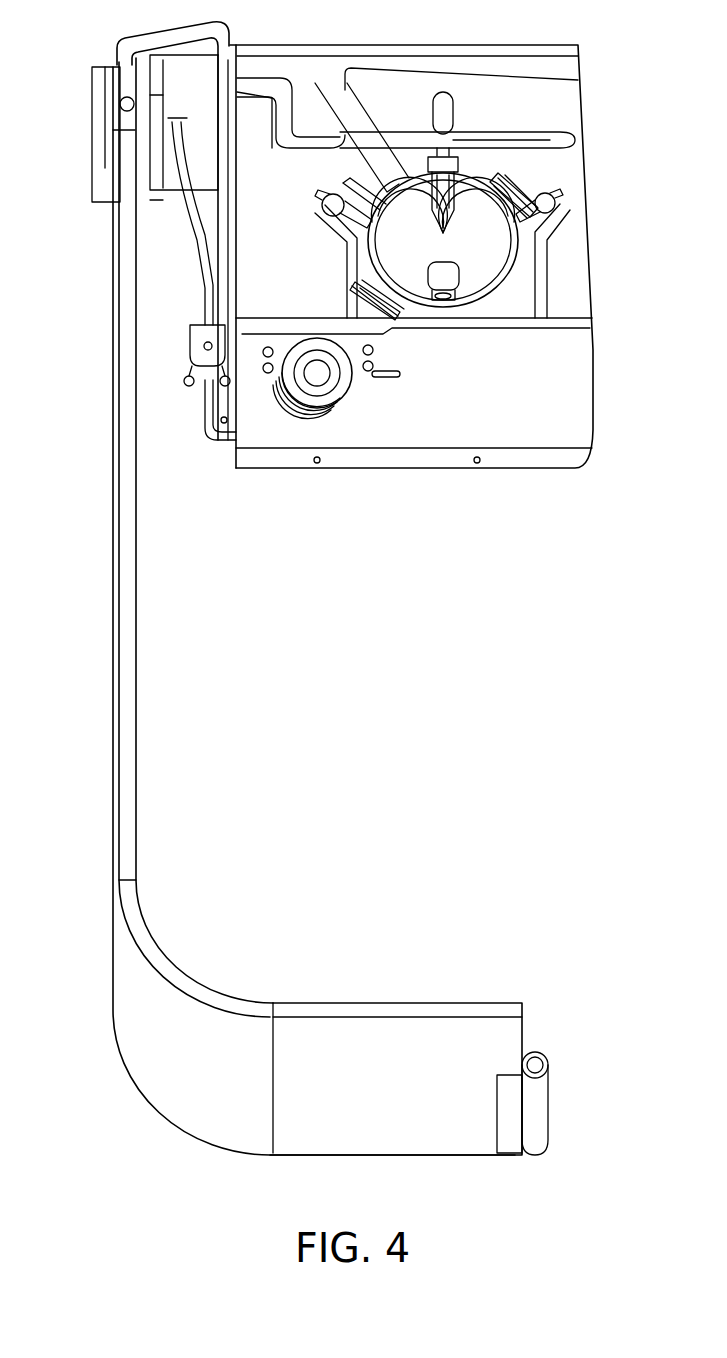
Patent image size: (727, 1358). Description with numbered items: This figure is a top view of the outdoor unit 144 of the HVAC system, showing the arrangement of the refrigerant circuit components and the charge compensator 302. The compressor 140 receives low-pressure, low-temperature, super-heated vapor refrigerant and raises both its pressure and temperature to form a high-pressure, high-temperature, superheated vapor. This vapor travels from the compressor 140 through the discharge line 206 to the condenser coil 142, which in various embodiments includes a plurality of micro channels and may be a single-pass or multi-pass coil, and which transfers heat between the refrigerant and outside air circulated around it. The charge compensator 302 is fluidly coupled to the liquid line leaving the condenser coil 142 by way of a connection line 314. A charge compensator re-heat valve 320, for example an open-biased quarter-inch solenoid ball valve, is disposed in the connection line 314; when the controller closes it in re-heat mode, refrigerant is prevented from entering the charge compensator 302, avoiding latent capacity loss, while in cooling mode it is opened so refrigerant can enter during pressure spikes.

The discharge line 206 is at (253, 80).
The connection line 314 is at (190, 219).
The charge compensator re-heat valve 320 is at (198, 354).
The compressor 140 is at (498, 243).
The charge compensator 302 is at (317, 380).
The outdoor unit 144 is at (326, 578).
The condenser coil 142 is at (133, 684).